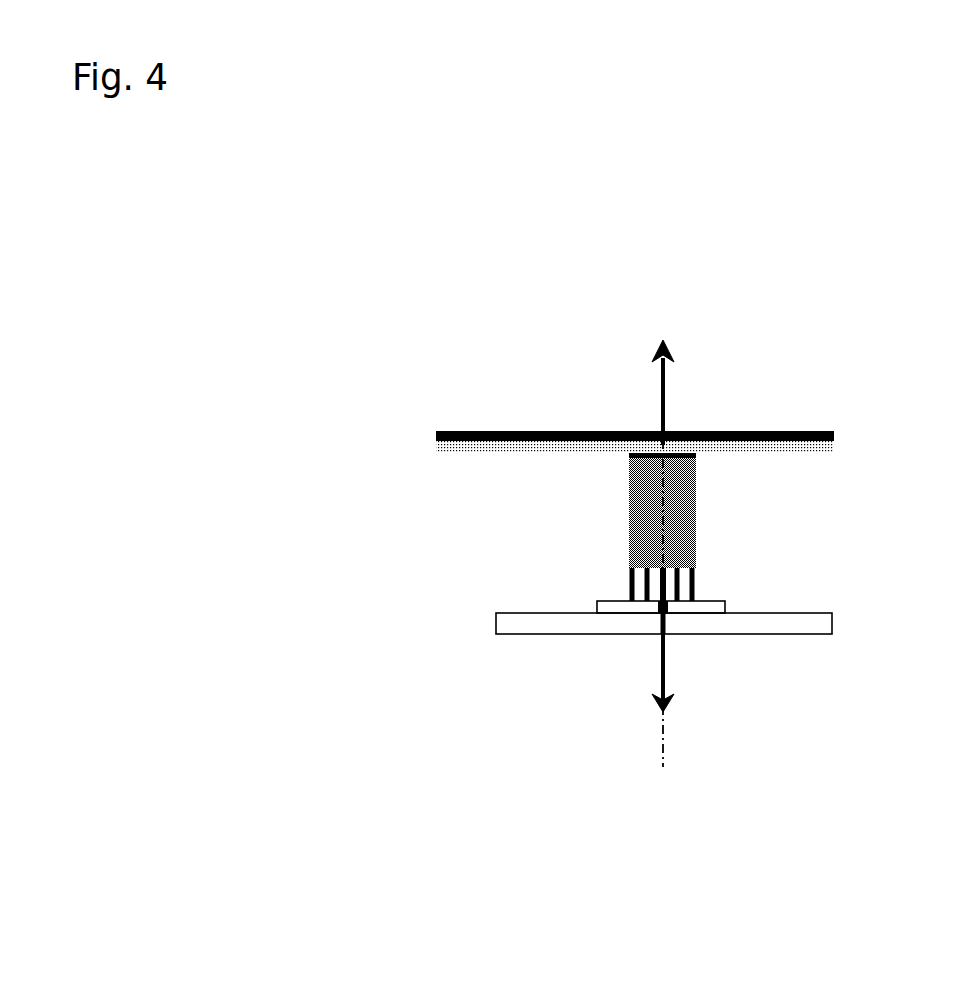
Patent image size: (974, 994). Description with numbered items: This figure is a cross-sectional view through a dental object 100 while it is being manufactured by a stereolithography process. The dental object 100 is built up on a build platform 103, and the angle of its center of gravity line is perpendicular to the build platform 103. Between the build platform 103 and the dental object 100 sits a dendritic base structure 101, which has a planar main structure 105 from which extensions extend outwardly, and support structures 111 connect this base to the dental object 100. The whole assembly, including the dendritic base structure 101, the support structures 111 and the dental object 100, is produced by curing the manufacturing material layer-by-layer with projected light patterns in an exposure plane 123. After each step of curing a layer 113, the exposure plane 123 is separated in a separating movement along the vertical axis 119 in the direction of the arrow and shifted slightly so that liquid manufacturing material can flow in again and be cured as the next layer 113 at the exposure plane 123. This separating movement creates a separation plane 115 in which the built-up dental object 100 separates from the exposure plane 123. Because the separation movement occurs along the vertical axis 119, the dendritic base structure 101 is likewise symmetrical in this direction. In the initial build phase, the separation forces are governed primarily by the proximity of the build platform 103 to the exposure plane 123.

The dental object 100 is at (697, 510).
The dendritic base structure 101 is at (640, 604).
The build platform 103 is at (810, 622).
The planar main structure 105 is at (661, 613).
The support structures 111 is at (693, 593).
The layer 113 is at (630, 455).
The separation plane 115 is at (638, 450).
The vertical axis 119 is at (667, 688).
The exposure plane 123 is at (719, 431).